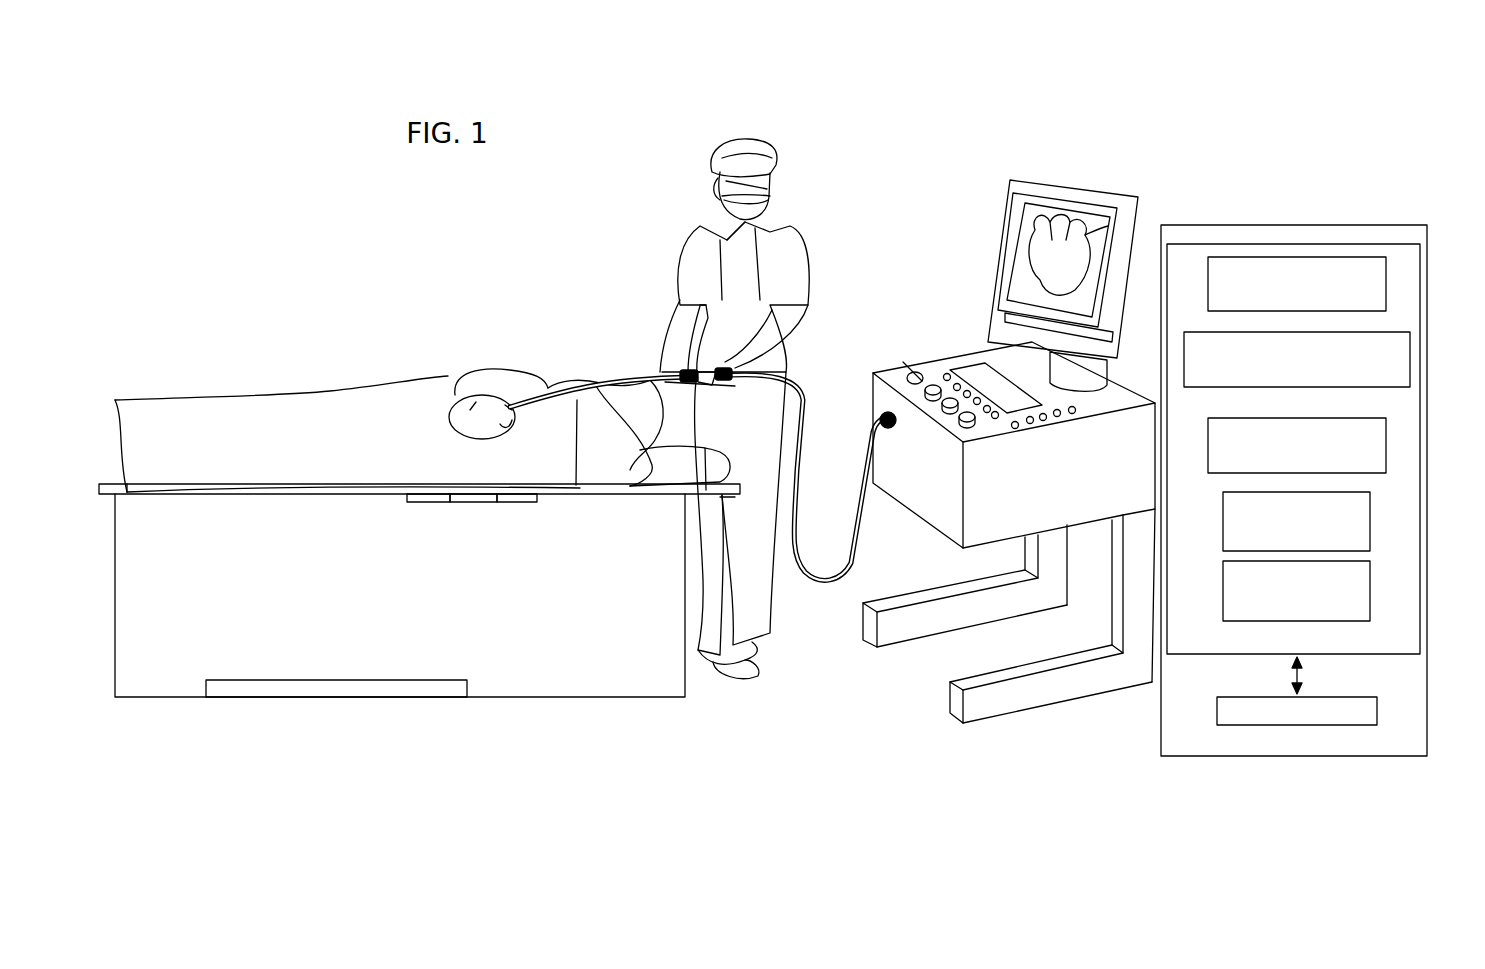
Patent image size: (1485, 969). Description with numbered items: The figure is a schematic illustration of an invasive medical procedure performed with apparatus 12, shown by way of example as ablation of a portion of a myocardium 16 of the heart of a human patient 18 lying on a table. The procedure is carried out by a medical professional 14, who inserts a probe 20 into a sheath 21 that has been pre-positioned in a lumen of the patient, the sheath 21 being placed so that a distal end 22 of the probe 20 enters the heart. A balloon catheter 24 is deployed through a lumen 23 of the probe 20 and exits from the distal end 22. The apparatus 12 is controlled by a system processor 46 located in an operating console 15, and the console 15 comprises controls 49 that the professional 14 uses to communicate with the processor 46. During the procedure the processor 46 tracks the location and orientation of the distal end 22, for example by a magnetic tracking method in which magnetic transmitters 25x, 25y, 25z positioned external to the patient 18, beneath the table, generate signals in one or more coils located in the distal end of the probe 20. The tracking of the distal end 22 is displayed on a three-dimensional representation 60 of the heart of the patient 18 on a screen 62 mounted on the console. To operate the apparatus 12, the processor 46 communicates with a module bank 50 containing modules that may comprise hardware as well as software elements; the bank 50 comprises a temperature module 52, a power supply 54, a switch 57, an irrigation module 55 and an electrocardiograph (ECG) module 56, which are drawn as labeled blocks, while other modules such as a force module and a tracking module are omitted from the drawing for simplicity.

The apparatus 12 is at (889, 165).
The medical professional 14 is at (738, 145).
The operating console 15 is at (955, 350).
The myocardium 16 is at (465, 380).
The human patient 18 is at (208, 410).
The probe 20 is at (572, 378).
The sheath 21 is at (533, 382).
The distal end 22 is at (504, 343).
The lumen 23 is at (485, 292).
The balloon catheter 24 is at (416, 340).
The magnetic transmitter 25x is at (428, 504).
The magnetic transmitter 25y is at (478, 504).
The magnetic transmitter 25z is at (518, 504).
The system processor 46 is at (1233, 725).
The controls 49 is at (920, 372).
The module bank 50 is at (1187, 656).
The temperature module 52 is at (1380, 257).
The power supply 54 is at (1410, 360).
The irrigation module 55 is at (1372, 506).
The electrocardiograph (ECG) module 56 is at (1372, 580).
The switch 57 is at (1390, 470).
The three-dimensional representation 60 is at (1040, 195).
The screen 62 is at (1005, 193).